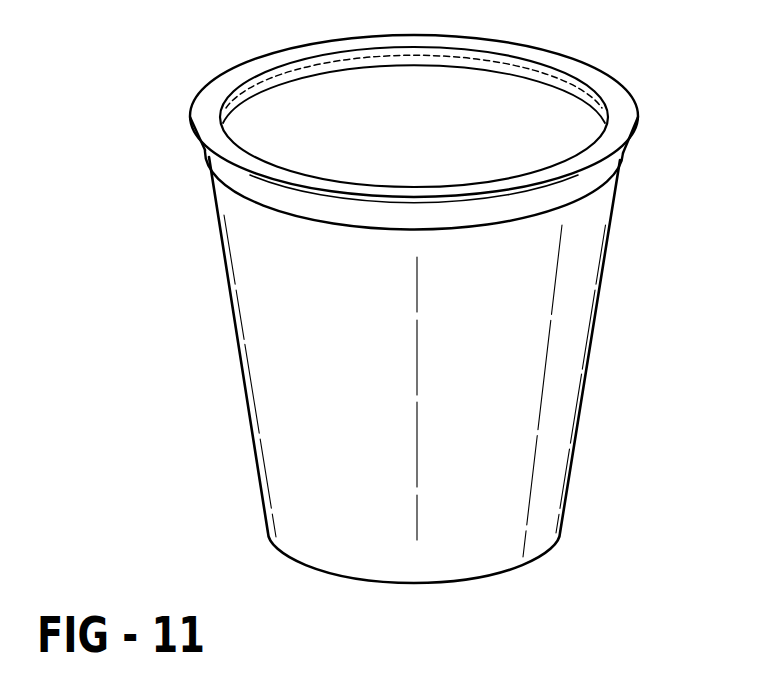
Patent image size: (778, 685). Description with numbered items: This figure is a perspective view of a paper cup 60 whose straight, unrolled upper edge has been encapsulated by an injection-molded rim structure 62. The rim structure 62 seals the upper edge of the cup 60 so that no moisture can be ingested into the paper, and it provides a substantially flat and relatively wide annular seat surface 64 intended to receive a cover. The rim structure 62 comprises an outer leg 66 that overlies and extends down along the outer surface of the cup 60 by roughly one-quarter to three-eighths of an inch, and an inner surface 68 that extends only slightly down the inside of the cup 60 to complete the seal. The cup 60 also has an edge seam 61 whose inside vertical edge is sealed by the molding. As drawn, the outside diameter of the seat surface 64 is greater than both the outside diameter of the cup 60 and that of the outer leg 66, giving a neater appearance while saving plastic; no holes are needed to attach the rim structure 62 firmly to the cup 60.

The paper cup 60 is at (565, 338).
The edge seam 61 is at (542, 448).
The rim structure 62 is at (439, 298).
The annular seat surface 64 is at (578, 72).
The outer leg 66 is at (252, 193).
The inner surface 68 is at (433, 57).